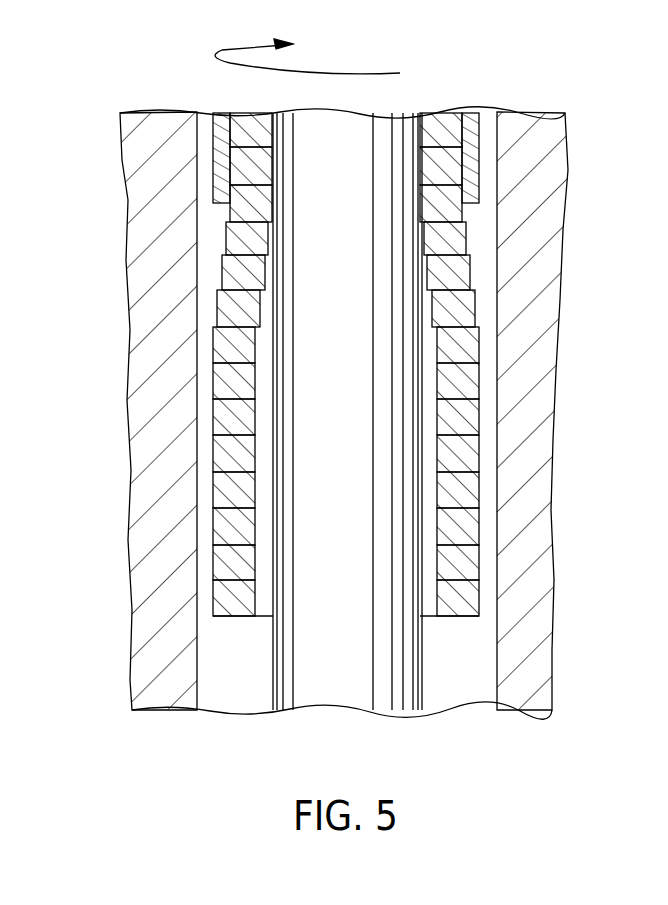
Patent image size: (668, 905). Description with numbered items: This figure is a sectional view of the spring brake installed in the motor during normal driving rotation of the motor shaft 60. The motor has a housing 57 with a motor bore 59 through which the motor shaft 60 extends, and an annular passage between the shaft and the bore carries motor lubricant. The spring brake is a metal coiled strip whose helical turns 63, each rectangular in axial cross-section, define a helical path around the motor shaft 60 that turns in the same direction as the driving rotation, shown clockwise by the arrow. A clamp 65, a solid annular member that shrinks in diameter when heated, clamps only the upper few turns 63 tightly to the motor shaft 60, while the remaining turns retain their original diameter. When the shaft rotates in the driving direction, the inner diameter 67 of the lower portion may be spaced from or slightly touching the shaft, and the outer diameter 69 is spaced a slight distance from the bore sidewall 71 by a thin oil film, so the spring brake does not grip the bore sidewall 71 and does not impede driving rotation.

The housing 57 is at (130, 132).
The motor bore 59 is at (476, 685).
The motor shaft 60 is at (327, 688).
The helical turns 63 is at (465, 421).
The clamp 65 is at (478, 176).
The inner diameter 67 is at (240, 463).
The outer diameter 69 is at (480, 517).
The bore sidewall 71 is at (483, 647).